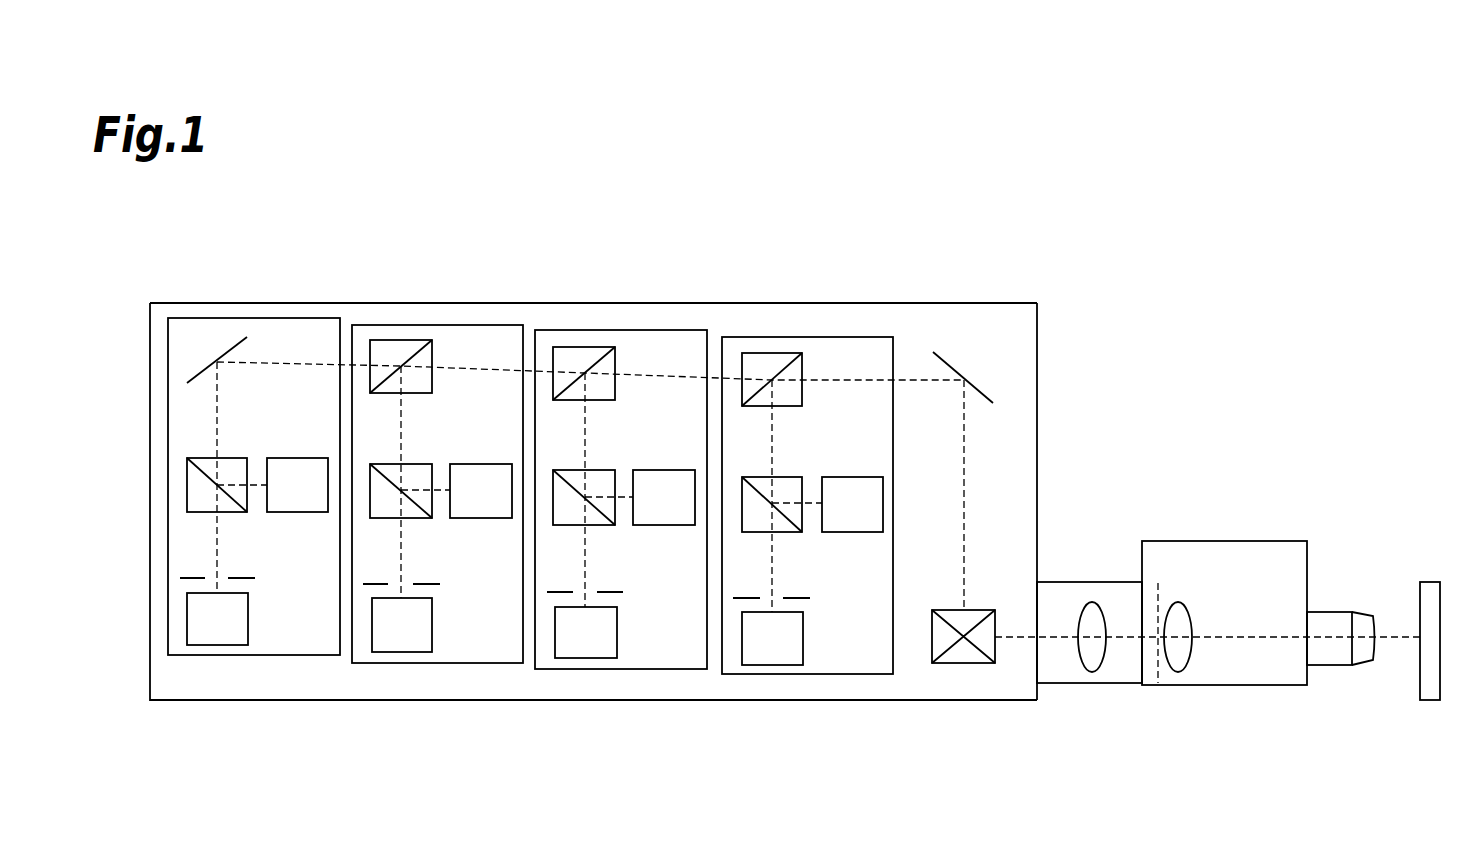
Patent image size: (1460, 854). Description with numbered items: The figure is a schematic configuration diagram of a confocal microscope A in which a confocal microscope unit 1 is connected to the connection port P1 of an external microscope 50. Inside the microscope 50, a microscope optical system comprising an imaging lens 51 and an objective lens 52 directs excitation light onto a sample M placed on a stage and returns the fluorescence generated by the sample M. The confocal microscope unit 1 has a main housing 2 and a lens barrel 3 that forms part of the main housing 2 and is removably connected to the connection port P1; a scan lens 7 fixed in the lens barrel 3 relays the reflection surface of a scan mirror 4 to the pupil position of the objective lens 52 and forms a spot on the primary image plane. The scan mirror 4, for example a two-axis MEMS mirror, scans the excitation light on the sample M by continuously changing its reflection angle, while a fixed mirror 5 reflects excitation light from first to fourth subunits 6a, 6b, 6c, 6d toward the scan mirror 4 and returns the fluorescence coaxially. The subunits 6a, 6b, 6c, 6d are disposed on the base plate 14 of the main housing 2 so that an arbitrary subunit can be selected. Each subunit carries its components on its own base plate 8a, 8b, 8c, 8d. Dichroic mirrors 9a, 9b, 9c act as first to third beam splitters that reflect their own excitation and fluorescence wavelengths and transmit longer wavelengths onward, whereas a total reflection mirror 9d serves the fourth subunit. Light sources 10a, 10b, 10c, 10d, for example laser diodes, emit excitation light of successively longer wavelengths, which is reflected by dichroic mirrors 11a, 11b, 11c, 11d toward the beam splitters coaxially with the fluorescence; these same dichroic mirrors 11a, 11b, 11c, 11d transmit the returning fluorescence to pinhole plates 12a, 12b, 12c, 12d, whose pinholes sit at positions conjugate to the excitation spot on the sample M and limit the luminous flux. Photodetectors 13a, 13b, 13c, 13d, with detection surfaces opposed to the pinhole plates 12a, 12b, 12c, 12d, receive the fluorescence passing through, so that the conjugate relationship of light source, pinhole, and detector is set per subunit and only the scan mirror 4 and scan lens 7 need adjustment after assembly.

The confocal microscope A is at (1203, 338).
The confocal microscope unit 1 is at (1012, 303).
The main housing 2 is at (937, 303).
The base plate 14 is at (1023, 353).
The fixed mirror 5 is at (955, 367).
The scan mirror 4 is at (962, 665).
The lens barrel 3 is at (1088, 582).
The scan lens 7 is at (1087, 685).
The microscope 50 is at (1257, 541).
The connection port P1 is at (1165, 597).
The imaging lens 51 is at (1173, 683).
The objective lens 52 is at (1335, 612).
The sample M is at (1430, 582).
The first subunit 6a is at (875, 675).
The second subunit 6b is at (688, 670).
The third subunit 6c is at (500, 665).
The fourth subunit 6d is at (315, 657).
The base plate 8a is at (837, 667).
The base plate 8b is at (650, 662).
The base plate 8c is at (465, 655).
The base plate 8d is at (277, 647).
The dichroic mirror 9a is at (778, 353).
The dichroic mirror 9b is at (592, 347).
The dichroic mirror 9c is at (403, 340).
The total reflection mirror 9d is at (222, 350).
The light source 10a is at (853, 477).
The light source 10b is at (667, 470).
The light source 10c is at (480, 464).
The light source 10d is at (295, 458).
The dichroic mirror 11a is at (798, 477).
The dichroic mirror 11b is at (612, 470).
The dichroic mirror 11c is at (423, 464).
The dichroic mirror 11d is at (230, 458).
The pinhole plate 12a is at (740, 600).
The pinhole plate 12b is at (552, 594).
The pinhole plate 12c is at (365, 586).
The pinhole plate 12d is at (180, 580).
The photodetector 13a is at (777, 665).
The photodetector 13b is at (590, 658).
The photodetector 13c is at (405, 652).
The photodetector 13d is at (218, 645).